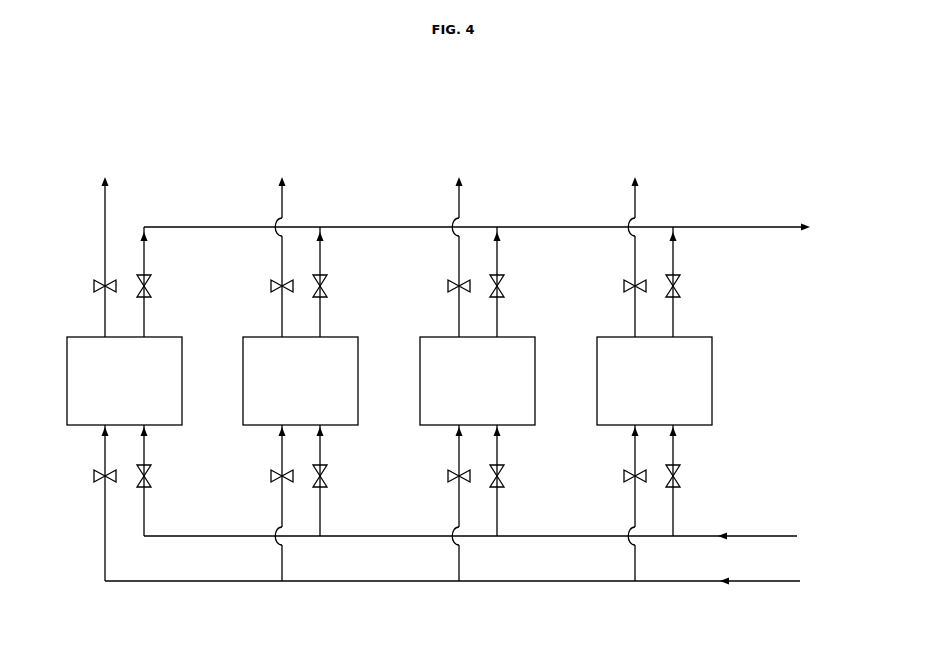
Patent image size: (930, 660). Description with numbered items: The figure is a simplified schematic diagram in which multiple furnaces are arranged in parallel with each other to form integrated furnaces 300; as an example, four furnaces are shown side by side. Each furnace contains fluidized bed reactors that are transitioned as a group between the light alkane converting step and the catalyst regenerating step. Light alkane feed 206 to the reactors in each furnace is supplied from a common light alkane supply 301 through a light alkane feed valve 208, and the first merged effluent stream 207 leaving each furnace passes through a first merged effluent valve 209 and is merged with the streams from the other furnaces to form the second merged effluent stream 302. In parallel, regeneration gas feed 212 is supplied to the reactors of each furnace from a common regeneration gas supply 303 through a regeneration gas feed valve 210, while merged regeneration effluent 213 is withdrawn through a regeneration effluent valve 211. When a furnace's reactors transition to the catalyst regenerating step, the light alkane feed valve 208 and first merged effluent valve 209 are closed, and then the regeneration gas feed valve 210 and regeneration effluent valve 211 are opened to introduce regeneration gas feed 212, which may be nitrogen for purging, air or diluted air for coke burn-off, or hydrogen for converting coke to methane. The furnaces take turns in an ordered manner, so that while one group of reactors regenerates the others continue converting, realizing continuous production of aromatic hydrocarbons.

The integrated furnaces 300 is at (423, 371).
The light alkane feed 206 is at (148, 513).
The first merged effluent stream 207 is at (150, 250).
The light alkane feed valve 208 is at (152, 471).
The first merged effluent valve 209 is at (152, 293).
The regeneration gas feed valve 210 is at (95, 478).
The regeneration effluent valve 211 is at (93, 283).
The regeneration gas feed 212 is at (102, 510).
The merged regeneration effluent 213 is at (100, 247).
The light alkane supply 301 is at (745, 534).
The second merged effluent stream 302 is at (735, 229).
The regeneration gas supply 303 is at (752, 585).